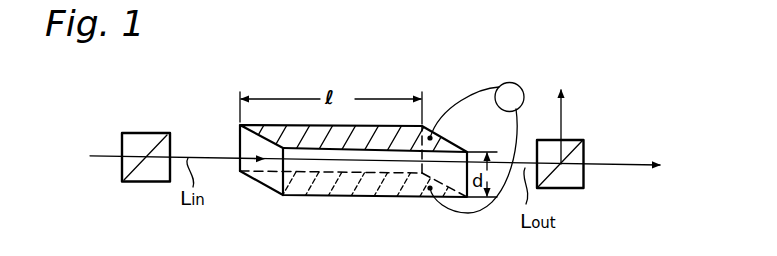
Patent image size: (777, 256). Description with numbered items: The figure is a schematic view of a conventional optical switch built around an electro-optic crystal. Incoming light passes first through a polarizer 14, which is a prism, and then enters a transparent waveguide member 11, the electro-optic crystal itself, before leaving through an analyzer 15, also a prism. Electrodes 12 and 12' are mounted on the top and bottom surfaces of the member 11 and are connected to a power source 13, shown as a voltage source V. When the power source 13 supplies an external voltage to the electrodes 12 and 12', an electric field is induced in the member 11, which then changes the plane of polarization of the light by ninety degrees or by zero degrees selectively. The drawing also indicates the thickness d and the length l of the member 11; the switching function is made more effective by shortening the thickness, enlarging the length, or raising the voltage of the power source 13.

The transparent waveguide member 11 is at (247, 150).
The electrode 12 is at (442, 102).
The electrode 12' is at (365, 209).
The power source 13 is at (520, 84).
The polarizer 14 is at (129, 132).
The analyzer 15 is at (584, 137).